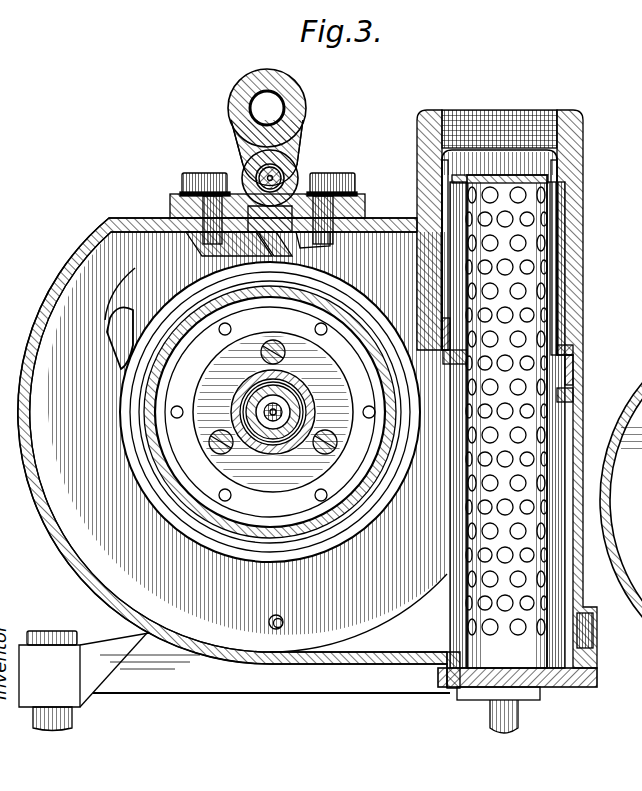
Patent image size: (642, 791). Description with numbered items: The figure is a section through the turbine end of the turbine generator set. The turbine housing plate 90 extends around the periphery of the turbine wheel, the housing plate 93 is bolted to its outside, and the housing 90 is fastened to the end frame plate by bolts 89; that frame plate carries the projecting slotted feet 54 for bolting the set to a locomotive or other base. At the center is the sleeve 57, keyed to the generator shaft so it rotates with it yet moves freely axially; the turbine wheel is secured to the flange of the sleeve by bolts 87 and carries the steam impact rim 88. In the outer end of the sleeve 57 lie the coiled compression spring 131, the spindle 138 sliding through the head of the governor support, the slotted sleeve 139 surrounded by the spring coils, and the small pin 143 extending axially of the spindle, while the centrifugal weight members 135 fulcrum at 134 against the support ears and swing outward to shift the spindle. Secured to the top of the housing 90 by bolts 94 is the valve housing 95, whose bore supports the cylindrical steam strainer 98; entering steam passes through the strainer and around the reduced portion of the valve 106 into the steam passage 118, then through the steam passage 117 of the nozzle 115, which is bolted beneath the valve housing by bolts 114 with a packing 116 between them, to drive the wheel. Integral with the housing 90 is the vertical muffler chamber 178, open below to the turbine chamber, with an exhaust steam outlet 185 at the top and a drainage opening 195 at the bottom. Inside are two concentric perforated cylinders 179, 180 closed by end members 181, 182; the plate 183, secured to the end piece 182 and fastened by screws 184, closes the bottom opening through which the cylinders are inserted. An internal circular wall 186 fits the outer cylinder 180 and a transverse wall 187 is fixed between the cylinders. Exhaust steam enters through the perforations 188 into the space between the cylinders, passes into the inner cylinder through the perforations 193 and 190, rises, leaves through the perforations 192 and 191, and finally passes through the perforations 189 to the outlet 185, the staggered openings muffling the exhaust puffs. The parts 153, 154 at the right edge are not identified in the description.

The projecting slotted feet 54 is at (47, 677).
The sleeve 57 is at (283, 400).
The bolts 87 is at (280, 358).
The steam impact rim 88 is at (288, 552).
The bolts 89 is at (274, 630).
The turbine housing plate 90 is at (237, 620).
The housing plate 93 is at (325, 525).
The bolts 94 is at (182, 181).
The valve housing 95 is at (297, 152).
The cylindrical steam strainer 98 is at (290, 96).
The valve 106 is at (278, 176).
The bolts 114 is at (214, 174).
The nozzle 115 is at (130, 308).
The packing 116 is at (238, 188).
The steam passage 117 is at (205, 238).
The steam passage 118 is at (300, 233).
The coiled compression spring 131 is at (243, 380).
The fulcrum points 134 is at (160, 392).
The centrifugal weight members 135 is at (163, 383).
The spindle 138 is at (272, 442).
The sleeve 139 is at (292, 408).
The small pin 143 is at (246, 440).
The casing 153 is at (621, 500).
The casing wall 154 is at (641, 522).
The muffler chamber 178 is at (425, 290).
The inner perforated cylinder 179 is at (572, 330).
The outer perforated cylinder 180 is at (455, 635).
The end member 181 is at (545, 180).
The end piece 182 is at (542, 672).
The plate 183 is at (440, 680).
The screws 184 is at (575, 678).
The exhaust steam outlet 185 is at (517, 125).
The internal circular wall 186 is at (425, 320).
The transverse wall 187 is at (456, 366).
The perforations 188 is at (454, 480).
The perforations 189 is at (432, 297).
The perforations 190 is at (522, 597).
The perforations 191 is at (519, 222).
The perforations 192 is at (512, 388).
The perforations 193 is at (520, 460).
The opening 195 is at (595, 642).